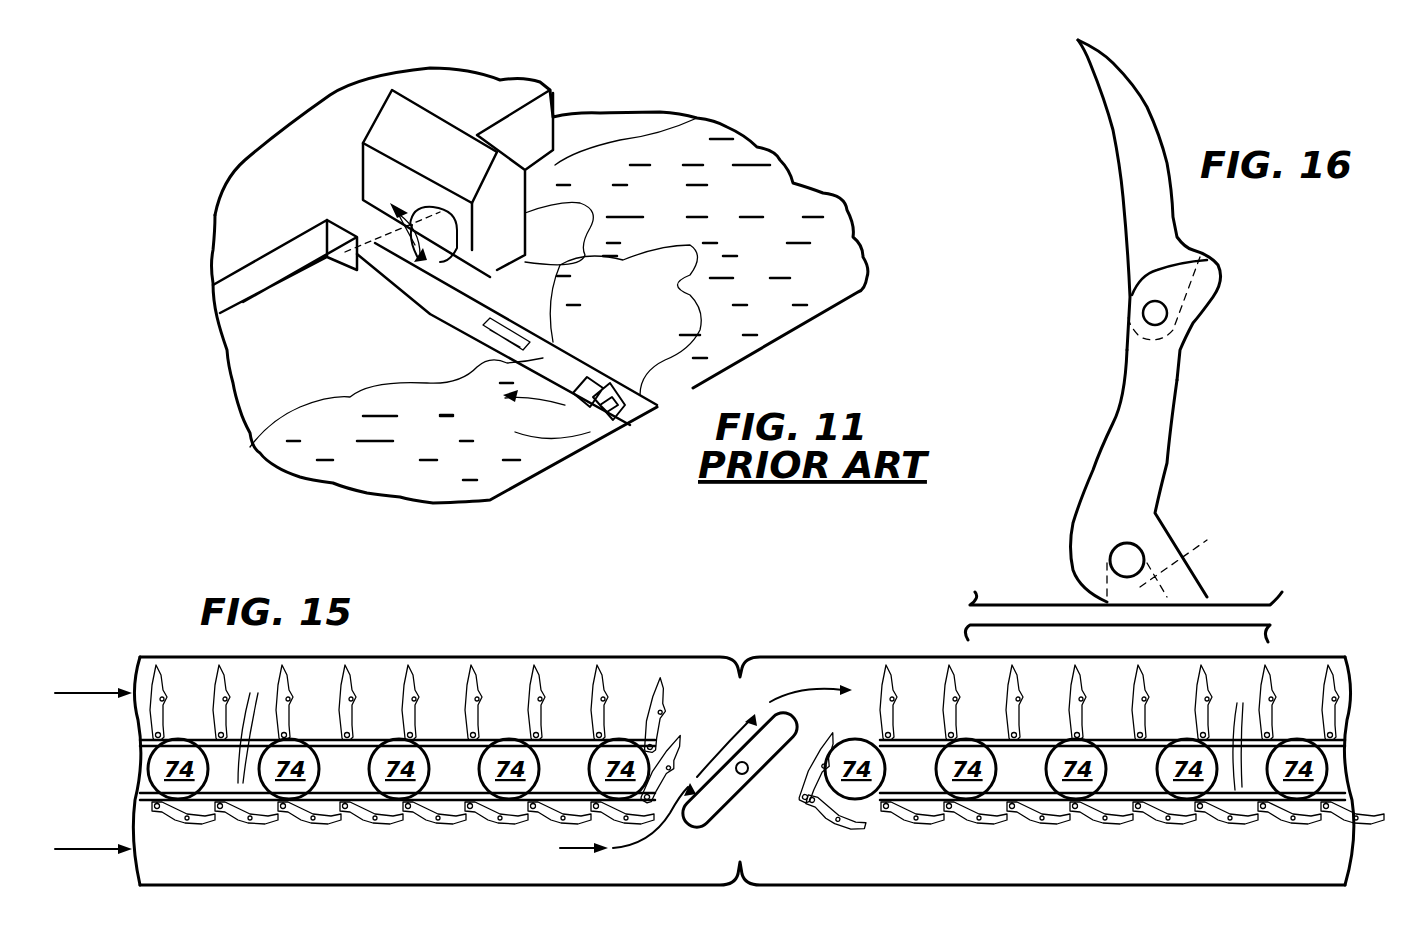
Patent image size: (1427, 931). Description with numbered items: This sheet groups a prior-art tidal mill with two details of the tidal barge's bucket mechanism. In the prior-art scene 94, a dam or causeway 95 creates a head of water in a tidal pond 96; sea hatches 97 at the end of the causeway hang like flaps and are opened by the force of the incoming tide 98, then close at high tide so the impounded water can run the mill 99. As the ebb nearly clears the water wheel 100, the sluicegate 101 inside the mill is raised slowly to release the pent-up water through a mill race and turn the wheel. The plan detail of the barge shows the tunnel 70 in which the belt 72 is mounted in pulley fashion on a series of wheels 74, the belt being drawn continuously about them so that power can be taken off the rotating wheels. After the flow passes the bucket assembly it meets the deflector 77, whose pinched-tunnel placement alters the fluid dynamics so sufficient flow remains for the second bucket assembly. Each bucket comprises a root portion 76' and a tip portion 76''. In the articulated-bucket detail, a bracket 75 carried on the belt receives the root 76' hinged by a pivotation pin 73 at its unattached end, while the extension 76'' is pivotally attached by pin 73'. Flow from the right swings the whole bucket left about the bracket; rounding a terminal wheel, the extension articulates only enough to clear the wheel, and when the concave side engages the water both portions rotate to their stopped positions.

In FIG. 11, the ground / terrain section 94 is at (783, 128).
In FIG. 11, the mill 99 is at (458, 183).
In FIG. 11, the tidal pond 96 is at (368, 278).
In FIG. 11, the dam 95 is at (482, 292).
In FIG. 11, the water wheel 100 is at (455, 238).
In FIG. 11, the sluicegate 101 is at (388, 228).
In FIG. 11, the sea hatches 97 is at (605, 412).
In FIG. 11, the incoming tide 98 is at (546, 414).
In FIG. 16, the tip portion 76'' is at (1128, 210).
In FIG. 15, the tip portion 76'' is at (744, 734).
In FIG. 16, the root portion 76' is at (1120, 476).
In FIG. 15, the root portion 76' is at (768, 767).
In FIG. 16, the pin 73' is at (1122, 298).
In FIG. 16, the pivotation pin 73 is at (1074, 533).
In FIG. 16, the bracket 75 is at (1190, 552).
In FIG. 16, the belt 72 is at (1015, 608).
In FIG. 15, the belt 72 is at (742, 731).
In FIG. 15, the tunnel 70 is at (622, 655).
In FIG. 15, the wheels 74 is at (737, 769).
In FIG. 15, the deflector 77 is at (717, 793).